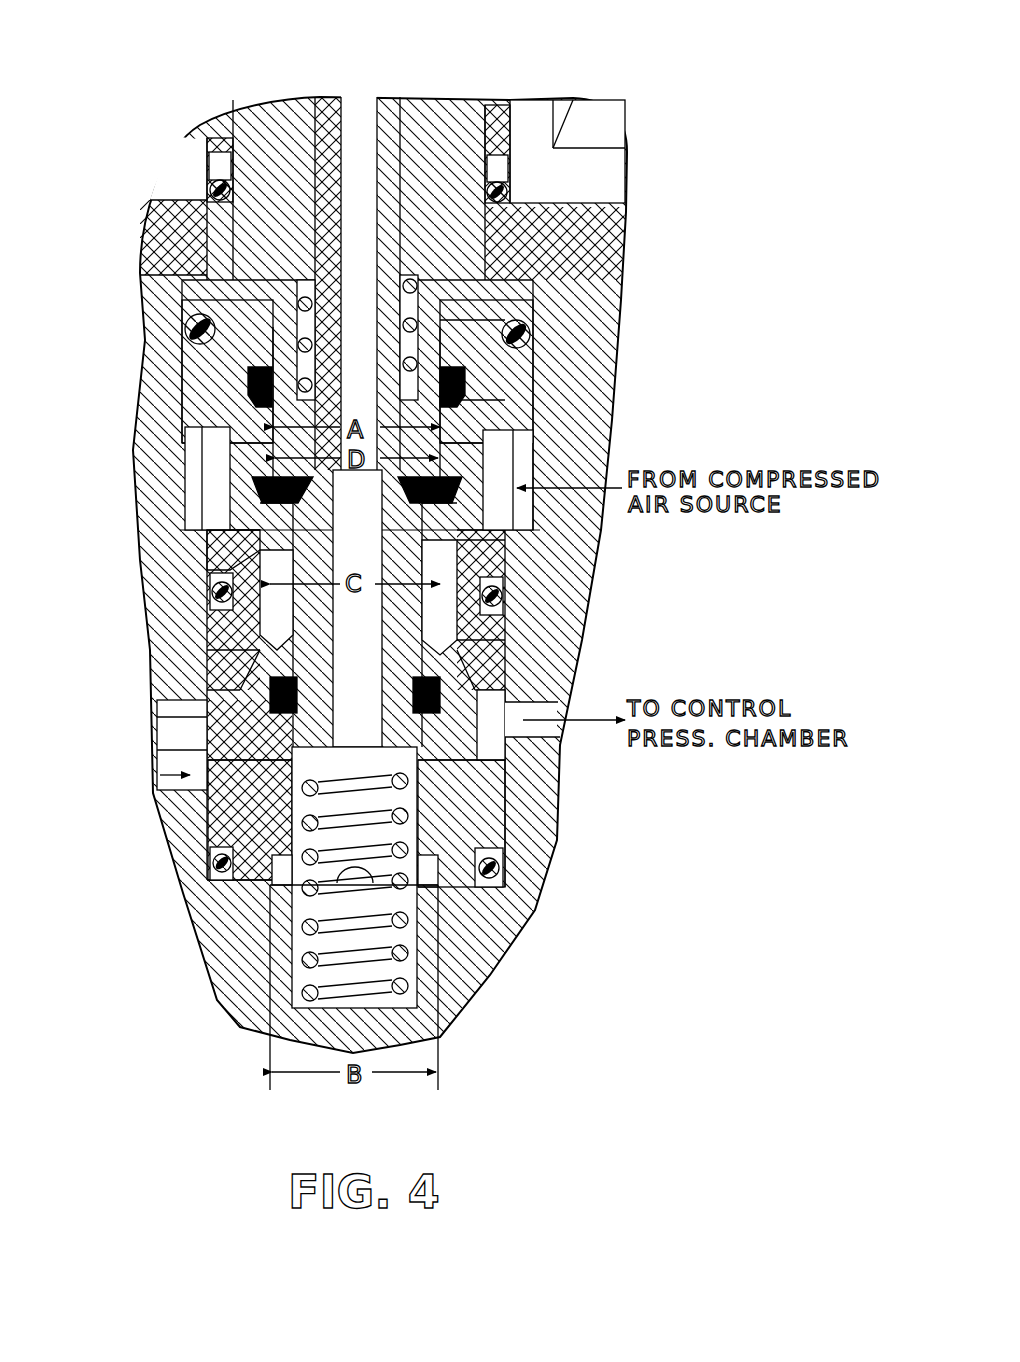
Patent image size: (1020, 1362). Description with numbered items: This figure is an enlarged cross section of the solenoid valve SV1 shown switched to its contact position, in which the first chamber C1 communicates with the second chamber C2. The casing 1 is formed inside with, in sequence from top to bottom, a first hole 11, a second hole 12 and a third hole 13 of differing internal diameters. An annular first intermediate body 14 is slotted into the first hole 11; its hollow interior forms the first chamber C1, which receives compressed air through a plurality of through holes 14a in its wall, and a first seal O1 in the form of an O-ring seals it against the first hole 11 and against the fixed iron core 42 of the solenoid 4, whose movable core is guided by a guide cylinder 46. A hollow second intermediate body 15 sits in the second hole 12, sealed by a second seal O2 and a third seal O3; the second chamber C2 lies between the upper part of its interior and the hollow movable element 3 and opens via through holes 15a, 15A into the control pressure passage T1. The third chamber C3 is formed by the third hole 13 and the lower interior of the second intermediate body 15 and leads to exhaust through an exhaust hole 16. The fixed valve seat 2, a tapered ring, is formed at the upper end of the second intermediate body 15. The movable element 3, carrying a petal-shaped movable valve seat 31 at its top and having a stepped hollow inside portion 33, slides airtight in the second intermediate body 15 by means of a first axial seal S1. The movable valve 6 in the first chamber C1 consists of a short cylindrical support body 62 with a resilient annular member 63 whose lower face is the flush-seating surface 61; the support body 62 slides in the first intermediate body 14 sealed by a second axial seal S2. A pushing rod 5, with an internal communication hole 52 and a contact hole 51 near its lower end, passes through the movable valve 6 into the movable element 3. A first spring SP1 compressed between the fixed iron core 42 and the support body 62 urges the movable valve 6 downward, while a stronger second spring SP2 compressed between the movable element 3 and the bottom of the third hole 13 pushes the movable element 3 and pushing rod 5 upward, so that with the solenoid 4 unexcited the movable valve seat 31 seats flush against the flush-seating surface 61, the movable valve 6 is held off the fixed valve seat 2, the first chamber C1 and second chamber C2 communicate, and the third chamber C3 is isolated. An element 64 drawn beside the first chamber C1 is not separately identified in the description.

The casing 1 is at (78, 218).
The fixed valve seat 2 is at (545, 543).
The movable element 3 is at (470, 632).
The solenoid 4 is at (585, 127).
The pushing rod 5 is at (325, 130).
The movable valve 6 is at (450, 380).
The first hole 11 is at (528, 440).
The second hole 12 is at (200, 747).
The third hole 13 is at (290, 925).
The first intermediate body 14 is at (205, 393).
The through holes 14a is at (505, 472).
The second intermediate body 15 is at (465, 816).
The through holes 15a is at (242, 672).
The passage 15A is at (482, 672).
The exhaust hole 16 is at (345, 878).
The movable valve seat 31 is at (235, 532).
The hollow inside portion 33 is at (242, 815).
The fixed iron core 42 is at (255, 142).
The guide cylinder 46 is at (492, 115).
The contact hole 51 is at (258, 585).
The communication hole 52 is at (358, 110).
The flush-seating surface 61 is at (262, 492).
The support body 62 is at (505, 362).
The annular member 63 is at (470, 415).
The spacer 64 is at (196, 452).
The first axial seal S1 is at (272, 695).
The second axial seal S2 is at (250, 386).
The first spring SP1 is at (418, 290).
The second spring SP2 is at (300, 965).
The supply valve SV1 is at (158, 775).
The first seal O1 is at (530, 335).
The second seal O2 is at (503, 594).
The third seal O3 is at (492, 866).
The first chamber C1 is at (215, 483).
The second chamber C2 is at (268, 600).
The third chamber C3 is at (432, 882).
The control pressure passage T1 is at (520, 758).